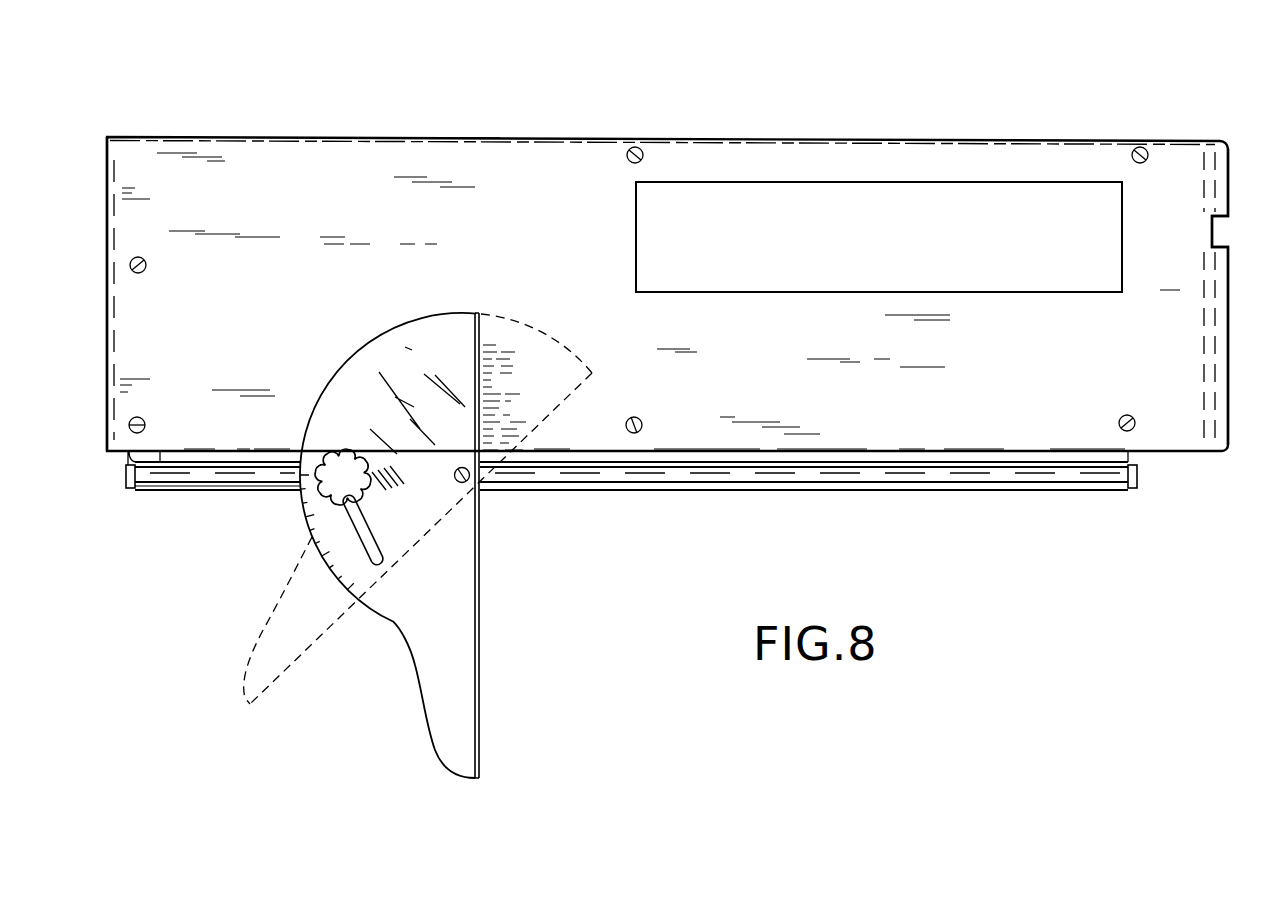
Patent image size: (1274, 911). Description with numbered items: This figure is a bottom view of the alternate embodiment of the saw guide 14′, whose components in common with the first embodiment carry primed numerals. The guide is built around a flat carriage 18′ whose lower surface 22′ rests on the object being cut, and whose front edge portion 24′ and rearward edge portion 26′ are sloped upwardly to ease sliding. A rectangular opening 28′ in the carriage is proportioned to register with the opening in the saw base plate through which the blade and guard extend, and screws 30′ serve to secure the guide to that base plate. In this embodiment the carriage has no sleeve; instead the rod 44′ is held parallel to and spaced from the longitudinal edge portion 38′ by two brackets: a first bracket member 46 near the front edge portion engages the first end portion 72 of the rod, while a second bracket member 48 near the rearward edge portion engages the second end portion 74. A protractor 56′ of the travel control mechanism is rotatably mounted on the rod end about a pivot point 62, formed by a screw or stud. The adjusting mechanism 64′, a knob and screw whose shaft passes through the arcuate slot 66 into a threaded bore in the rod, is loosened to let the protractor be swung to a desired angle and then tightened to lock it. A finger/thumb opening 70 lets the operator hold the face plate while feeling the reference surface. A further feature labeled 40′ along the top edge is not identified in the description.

The saw guide 14′ is at (582, 101).
The carriage 18′ is at (503, 229).
The lower surface 22′ is at (318, 152).
The front edge portion 24′ is at (1228, 300).
The rearward edge portion 26′ is at (106, 283).
The opening 28′ is at (805, 182).
The screws 30′ is at (1135, 148).
The longitudinal edge portion 38′ is at (767, 462).
The upper edge surface 40′ is at (462, 138).
The rod 44′ is at (853, 490).
The first bracket member 46 is at (1129, 492).
The second bracket member 48 is at (135, 492).
The protractor 56′ is at (480, 598).
The pivot point 62 is at (470, 484).
The adjusting mechanism 64′ is at (333, 451).
The arcuate slot 66 is at (376, 542).
The finger/thumb opening 70 is at (481, 665).
The first end portion 72 is at (1018, 493).
The second end portion 74 is at (172, 492).